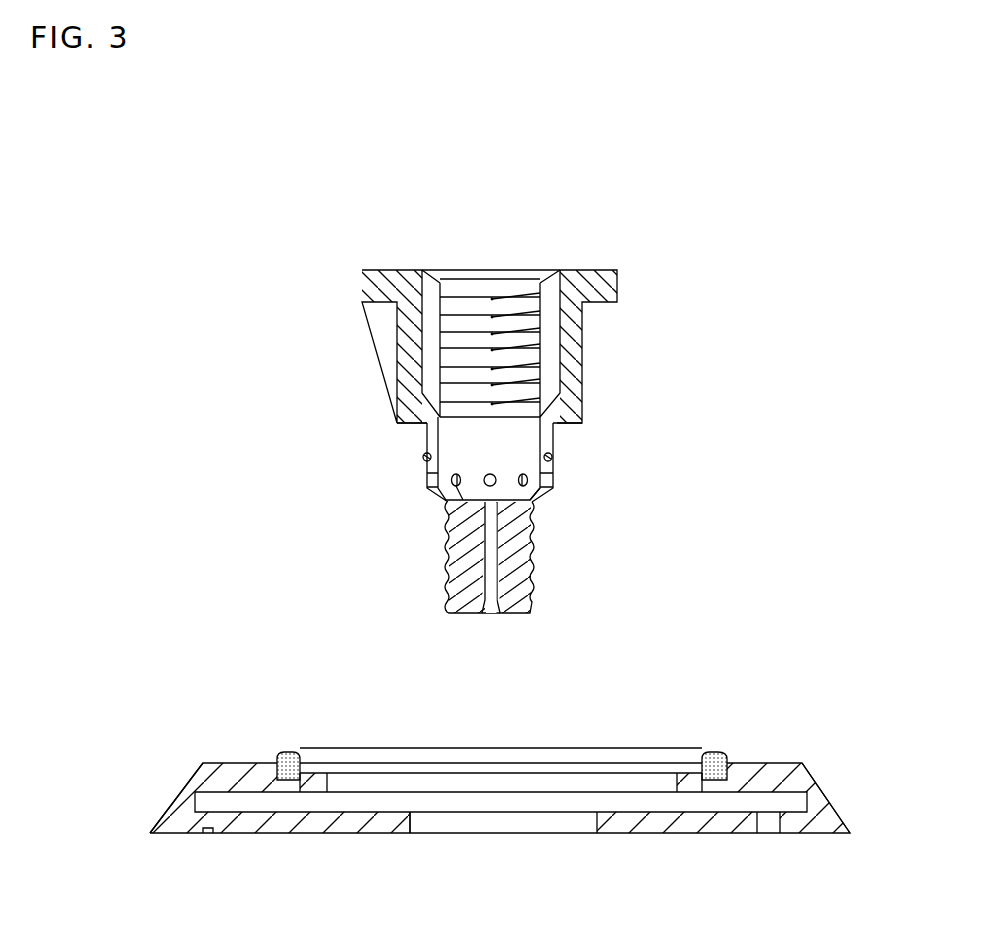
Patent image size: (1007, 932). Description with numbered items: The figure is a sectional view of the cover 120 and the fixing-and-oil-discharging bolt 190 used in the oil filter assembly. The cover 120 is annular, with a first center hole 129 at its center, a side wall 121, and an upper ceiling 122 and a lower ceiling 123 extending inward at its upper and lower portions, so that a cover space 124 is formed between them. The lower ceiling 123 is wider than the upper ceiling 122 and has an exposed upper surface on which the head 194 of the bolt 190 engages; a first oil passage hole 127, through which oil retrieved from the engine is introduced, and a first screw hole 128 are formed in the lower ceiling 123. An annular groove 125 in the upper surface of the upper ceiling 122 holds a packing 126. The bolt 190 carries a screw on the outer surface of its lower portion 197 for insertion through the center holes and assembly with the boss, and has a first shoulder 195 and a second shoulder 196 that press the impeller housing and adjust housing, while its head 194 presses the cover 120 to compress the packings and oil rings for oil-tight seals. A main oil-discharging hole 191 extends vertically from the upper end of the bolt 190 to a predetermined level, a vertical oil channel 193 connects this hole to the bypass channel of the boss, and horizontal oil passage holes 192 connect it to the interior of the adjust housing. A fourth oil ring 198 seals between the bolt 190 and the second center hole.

The fixing-and-oil-discharging bolt 190 is at (497, 391).
The head 194 is at (617, 270).
The main oil-discharging hole 191 is at (512, 432).
The first shoulder 195 is at (397, 430).
The fourth oil ring 198 is at (424, 458).
The horizontal oil passage holes 192 is at (553, 479).
The second shoulder 196 is at (548, 501).
The vertical oil channel 193 is at (492, 555).
The threaded stem 197 is at (532, 577).
The cover 120 is at (504, 792).
The upper ceiling 122 is at (773, 763).
The side wall 121 is at (185, 800).
The cover space 124 is at (255, 803).
The packing 126 is at (287, 750).
The annular groove 125 is at (273, 779).
The lower ceiling 123 is at (370, 827).
The first oil passage hole 127 is at (768, 828).
The first screw hole 128 is at (208, 828).
The first center hole 129 is at (410, 822).